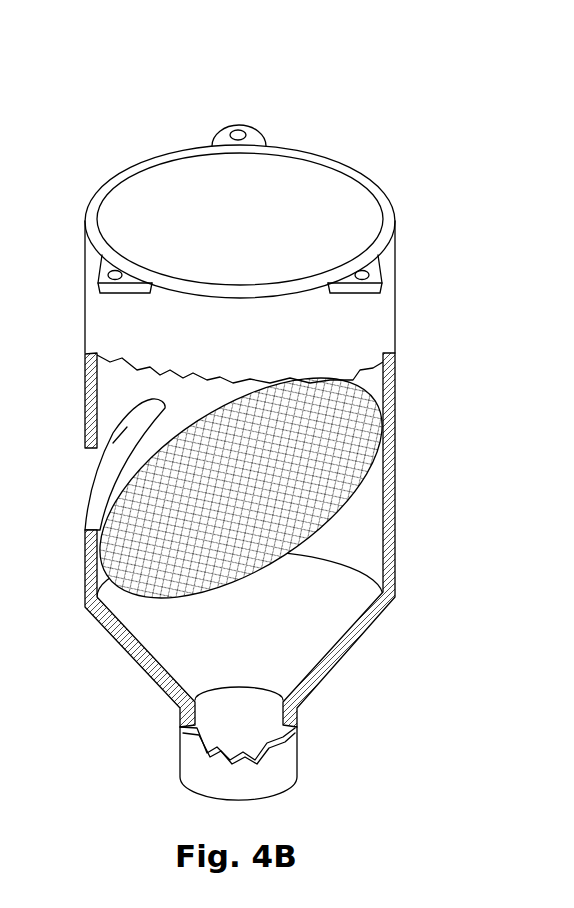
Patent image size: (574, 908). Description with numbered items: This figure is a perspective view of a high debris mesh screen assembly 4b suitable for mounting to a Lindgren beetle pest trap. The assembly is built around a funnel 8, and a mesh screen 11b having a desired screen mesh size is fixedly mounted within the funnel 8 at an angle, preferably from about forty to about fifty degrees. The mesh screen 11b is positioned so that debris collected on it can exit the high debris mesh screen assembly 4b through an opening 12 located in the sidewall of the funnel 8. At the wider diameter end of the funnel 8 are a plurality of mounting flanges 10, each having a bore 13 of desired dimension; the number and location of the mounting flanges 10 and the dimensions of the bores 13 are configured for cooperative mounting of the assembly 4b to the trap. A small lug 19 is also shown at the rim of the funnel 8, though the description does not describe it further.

The high debris mesh screen assembly 4b is at (251, 415).
The funnel 8 is at (241, 510).
The mounting flanges 10 is at (105, 266).
The bore 13 is at (375, 270).
The lug 19 is at (228, 128).
The mesh screen 11b is at (238, 594).
The opening 12 is at (103, 450).